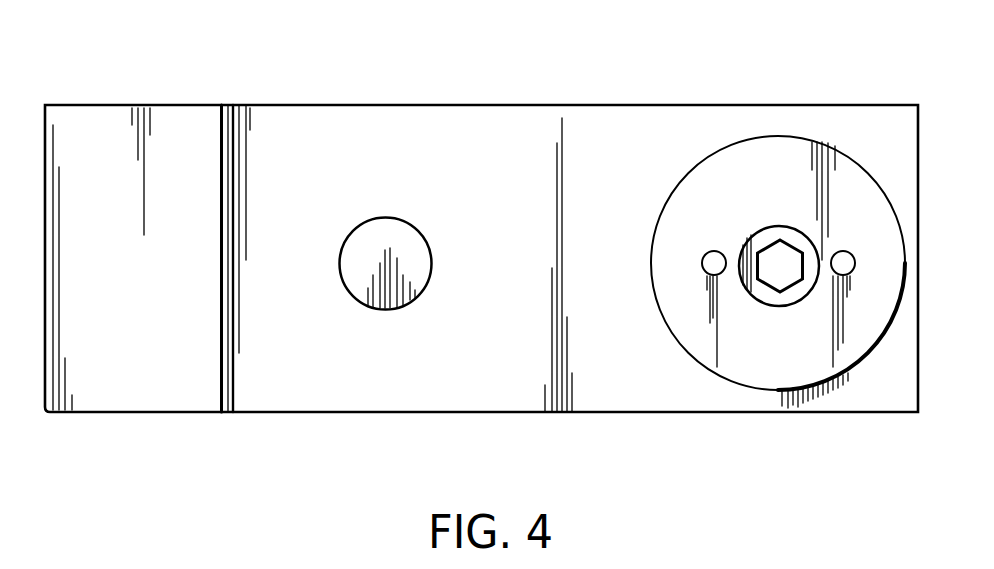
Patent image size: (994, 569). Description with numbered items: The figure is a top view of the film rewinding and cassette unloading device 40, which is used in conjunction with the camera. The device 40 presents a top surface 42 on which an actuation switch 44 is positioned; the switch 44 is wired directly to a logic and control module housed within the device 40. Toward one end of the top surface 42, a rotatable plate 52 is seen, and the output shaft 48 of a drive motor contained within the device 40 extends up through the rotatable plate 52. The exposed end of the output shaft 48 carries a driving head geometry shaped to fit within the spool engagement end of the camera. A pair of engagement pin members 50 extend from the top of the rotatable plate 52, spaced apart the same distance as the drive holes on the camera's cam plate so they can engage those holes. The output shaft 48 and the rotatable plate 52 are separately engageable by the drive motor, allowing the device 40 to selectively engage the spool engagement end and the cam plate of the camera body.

The film rewinding and cassette unloading device 40 is at (428, 395).
The top surface 42 is at (288, 140).
The actuation switch 44 is at (397, 228).
The output shaft 48 is at (772, 248).
The engagement pin members 50 is at (712, 252).
The rotatable plate 52 is at (853, 183).